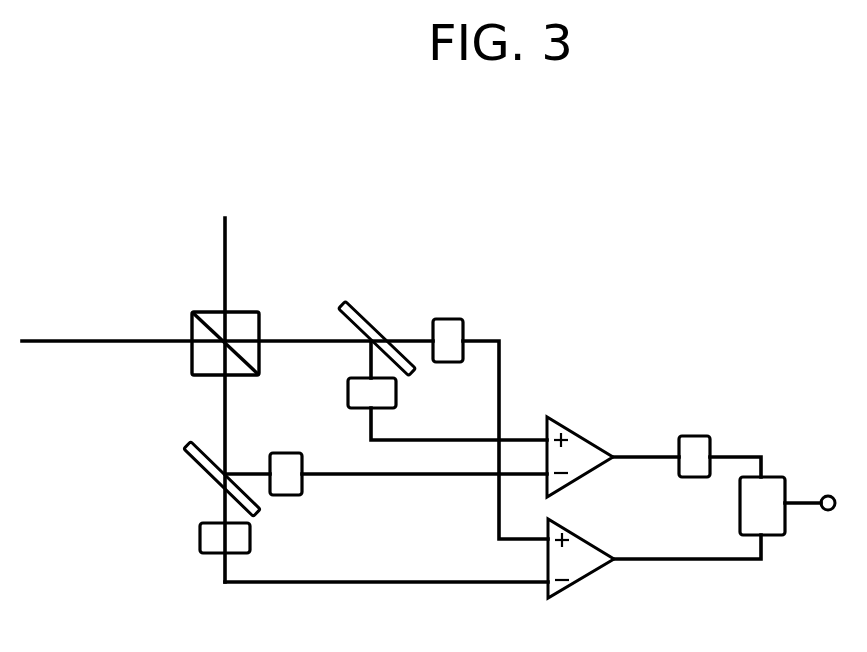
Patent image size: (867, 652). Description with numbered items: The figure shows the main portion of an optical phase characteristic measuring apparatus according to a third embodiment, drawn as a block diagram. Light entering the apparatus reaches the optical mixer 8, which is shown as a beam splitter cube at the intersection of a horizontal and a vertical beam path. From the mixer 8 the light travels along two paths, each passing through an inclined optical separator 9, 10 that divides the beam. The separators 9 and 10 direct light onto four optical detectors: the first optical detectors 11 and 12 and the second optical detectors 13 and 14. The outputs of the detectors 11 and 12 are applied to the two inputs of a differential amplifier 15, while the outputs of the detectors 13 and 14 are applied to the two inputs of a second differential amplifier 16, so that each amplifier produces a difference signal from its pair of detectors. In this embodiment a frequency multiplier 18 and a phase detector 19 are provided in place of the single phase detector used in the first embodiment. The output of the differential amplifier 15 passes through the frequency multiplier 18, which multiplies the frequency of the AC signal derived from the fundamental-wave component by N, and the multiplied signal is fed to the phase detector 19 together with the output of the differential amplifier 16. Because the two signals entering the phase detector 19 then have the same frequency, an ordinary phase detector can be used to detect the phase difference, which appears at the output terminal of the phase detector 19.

The optical mixer 8 is at (212, 317).
The optical separator 9 is at (355, 314).
The optical separator 10 is at (195, 455).
The first optical detector 11 is at (362, 392).
The first optical detector 12 is at (290, 480).
The second optical detector 13 is at (458, 330).
The second optical detector 14 is at (205, 537).
The differential amplifier 15 is at (580, 445).
The differential amplifier 16 is at (580, 565).
The frequency multiplier 18 is at (700, 450).
The phase detector 19 is at (775, 520).